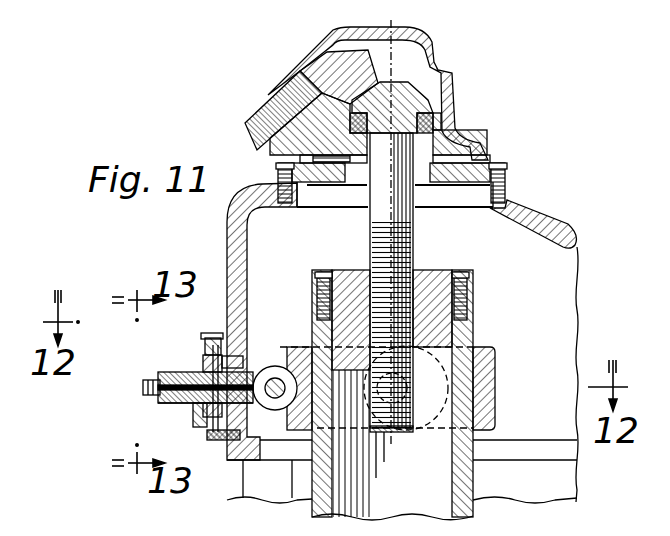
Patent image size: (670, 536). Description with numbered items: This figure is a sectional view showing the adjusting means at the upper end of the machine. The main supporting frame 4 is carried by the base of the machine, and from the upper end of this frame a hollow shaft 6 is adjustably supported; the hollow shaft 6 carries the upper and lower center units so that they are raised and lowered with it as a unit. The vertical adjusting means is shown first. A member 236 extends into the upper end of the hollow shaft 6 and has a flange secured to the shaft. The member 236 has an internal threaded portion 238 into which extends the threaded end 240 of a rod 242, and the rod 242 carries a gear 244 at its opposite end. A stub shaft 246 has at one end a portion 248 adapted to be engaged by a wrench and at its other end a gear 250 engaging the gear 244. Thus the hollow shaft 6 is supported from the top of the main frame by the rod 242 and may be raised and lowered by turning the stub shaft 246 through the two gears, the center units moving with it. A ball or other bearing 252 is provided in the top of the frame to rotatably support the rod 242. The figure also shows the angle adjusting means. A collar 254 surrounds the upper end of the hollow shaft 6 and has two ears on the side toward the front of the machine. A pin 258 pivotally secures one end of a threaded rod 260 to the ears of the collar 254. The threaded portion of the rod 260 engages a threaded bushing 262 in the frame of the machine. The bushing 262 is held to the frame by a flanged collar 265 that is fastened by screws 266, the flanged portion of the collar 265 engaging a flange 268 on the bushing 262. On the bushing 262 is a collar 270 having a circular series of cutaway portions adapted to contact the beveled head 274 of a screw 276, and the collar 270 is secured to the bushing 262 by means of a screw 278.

The main supporting frame 4 is at (550, 227).
The hollow shaft 6 is at (470, 328).
The member 236 is at (442, 282).
The internal threaded portion 238 is at (422, 270).
The threaded end 240 is at (364, 290).
The rod 242 is at (372, 207).
The gear 244 is at (425, 100).
The stub shaft 246 is at (300, 82).
The wrench-engaging portion 248 is at (253, 124).
The gear 250 is at (333, 31).
The bearing 252 is at (445, 125).
The collar 254 is at (496, 373).
The pin 258 is at (276, 394).
The threaded rod 260 is at (162, 398).
The threaded bushing 262 is at (178, 372).
The flanged collar 265 is at (200, 423).
The screws 266 is at (215, 438).
The flange 268 is at (232, 366).
The collar 270 is at (204, 360).
The beveled head 274 is at (205, 345).
The screw 276 is at (210, 334).
The screw 278 is at (200, 404).